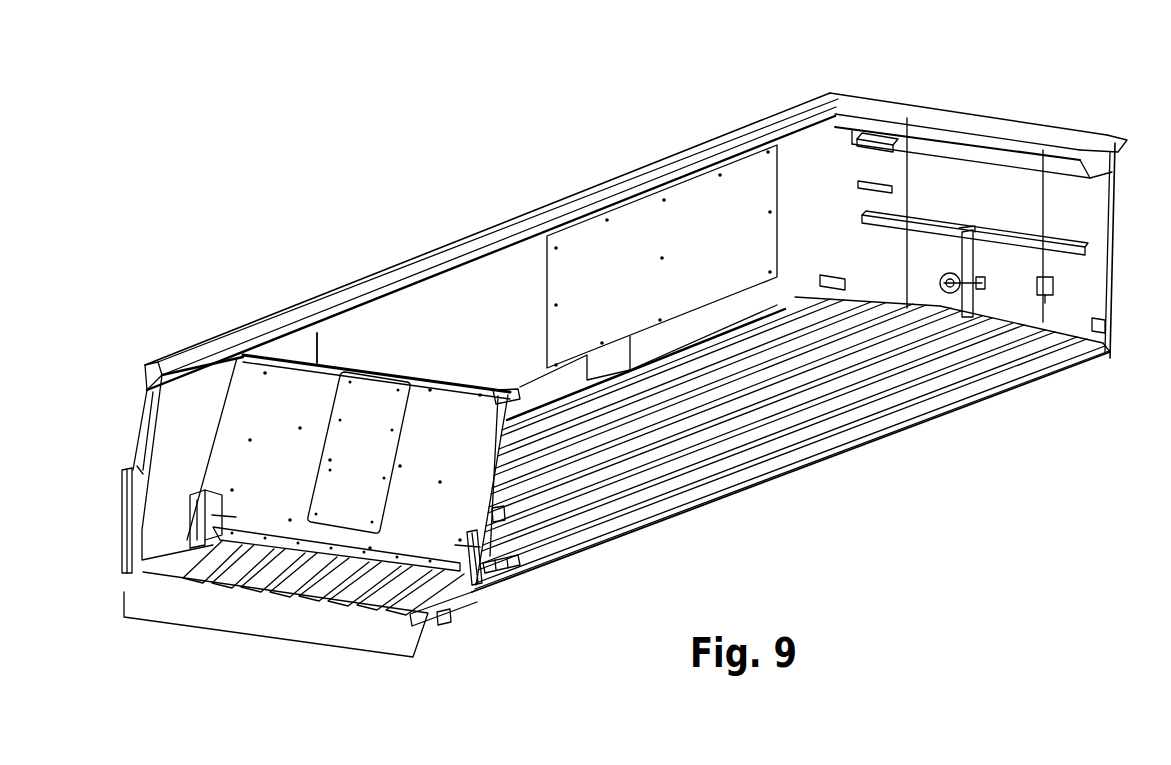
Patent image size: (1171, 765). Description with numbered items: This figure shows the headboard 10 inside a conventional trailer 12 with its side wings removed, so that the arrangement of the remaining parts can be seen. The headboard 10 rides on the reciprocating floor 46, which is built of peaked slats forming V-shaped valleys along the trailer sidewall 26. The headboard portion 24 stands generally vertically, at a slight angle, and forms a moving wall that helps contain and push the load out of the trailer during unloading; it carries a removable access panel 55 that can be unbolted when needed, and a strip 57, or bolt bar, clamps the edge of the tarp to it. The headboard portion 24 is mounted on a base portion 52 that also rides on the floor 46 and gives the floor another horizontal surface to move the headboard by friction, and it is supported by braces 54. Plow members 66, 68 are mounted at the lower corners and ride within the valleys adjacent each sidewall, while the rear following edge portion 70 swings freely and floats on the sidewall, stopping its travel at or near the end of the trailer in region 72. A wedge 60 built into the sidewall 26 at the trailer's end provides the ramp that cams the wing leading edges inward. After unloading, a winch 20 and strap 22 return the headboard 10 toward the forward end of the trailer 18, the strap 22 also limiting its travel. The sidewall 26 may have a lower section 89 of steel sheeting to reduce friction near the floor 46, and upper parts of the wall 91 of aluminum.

The headboard 10 is at (334, 350).
The trailer 12 is at (463, 235).
The forward end of the trailer 18 is at (955, 184).
The winch 20 is at (968, 283).
The strap 22 is at (927, 303).
The headboard portion 24 is at (275, 393).
The trailer sidewall 26 is at (590, 295).
The floor 46 is at (820, 390).
The base portion 52 is at (507, 560).
The braces 54 is at (497, 516).
The access panel 55 is at (352, 444).
The strip (bolt bar) 57 is at (373, 567).
The wedge 60 is at (143, 462).
The plow member 66 is at (219, 576).
The plow member 68 is at (473, 588).
The rear edge portion (following wing) 70 is at (212, 516).
The region 72 is at (146, 548).
The lower section of the wall 89 is at (711, 318).
The upper parts of the wall 91 is at (688, 200).